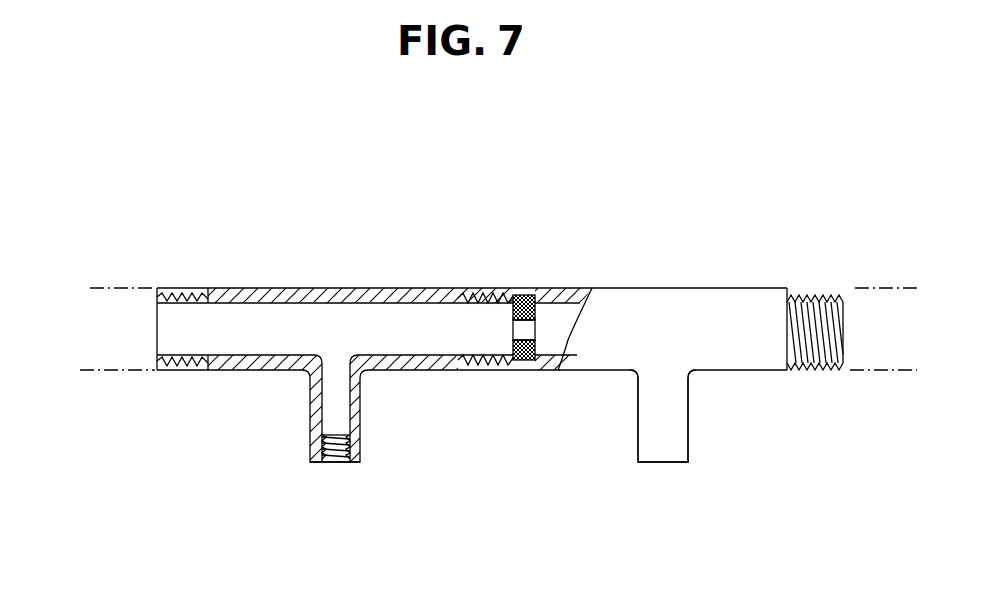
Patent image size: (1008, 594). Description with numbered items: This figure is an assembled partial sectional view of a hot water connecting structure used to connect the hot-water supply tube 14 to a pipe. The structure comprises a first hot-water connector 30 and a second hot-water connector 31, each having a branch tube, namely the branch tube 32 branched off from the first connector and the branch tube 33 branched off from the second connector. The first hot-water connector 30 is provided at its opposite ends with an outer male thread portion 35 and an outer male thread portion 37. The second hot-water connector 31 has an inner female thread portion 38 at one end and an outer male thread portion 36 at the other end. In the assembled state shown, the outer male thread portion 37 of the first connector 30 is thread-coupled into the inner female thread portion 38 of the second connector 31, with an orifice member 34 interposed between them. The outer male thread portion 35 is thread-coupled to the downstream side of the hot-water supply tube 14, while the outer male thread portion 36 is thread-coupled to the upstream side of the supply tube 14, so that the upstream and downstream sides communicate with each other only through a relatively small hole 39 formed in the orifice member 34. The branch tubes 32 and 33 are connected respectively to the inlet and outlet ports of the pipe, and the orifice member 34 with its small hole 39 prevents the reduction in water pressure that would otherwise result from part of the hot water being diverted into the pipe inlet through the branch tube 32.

The hot-water supply tube 14 is at (120, 298).
The first hot-water connector 30 is at (327, 300).
The second hot-water connector 31 is at (650, 300).
The branch tube 32 is at (312, 425).
The branch tube 33 is at (646, 425).
The orifice member 34 is at (518, 358).
The outer male thread portion 35 is at (180, 372).
The outer male thread portion 36 is at (793, 372).
The outer male thread portion 37 is at (478, 305).
The inner female thread portion 38 is at (492, 288).
The small hole 39 is at (512, 332).